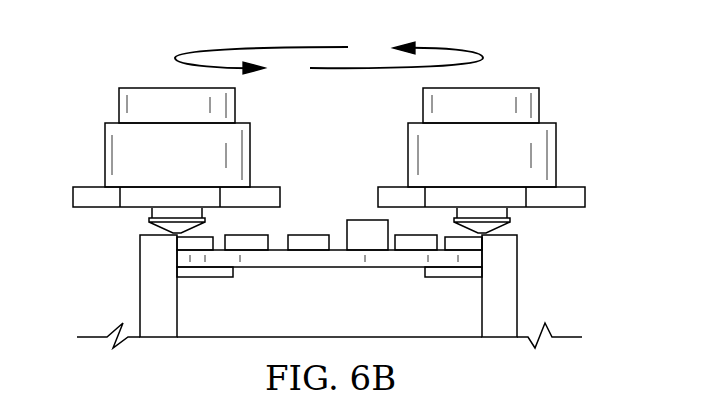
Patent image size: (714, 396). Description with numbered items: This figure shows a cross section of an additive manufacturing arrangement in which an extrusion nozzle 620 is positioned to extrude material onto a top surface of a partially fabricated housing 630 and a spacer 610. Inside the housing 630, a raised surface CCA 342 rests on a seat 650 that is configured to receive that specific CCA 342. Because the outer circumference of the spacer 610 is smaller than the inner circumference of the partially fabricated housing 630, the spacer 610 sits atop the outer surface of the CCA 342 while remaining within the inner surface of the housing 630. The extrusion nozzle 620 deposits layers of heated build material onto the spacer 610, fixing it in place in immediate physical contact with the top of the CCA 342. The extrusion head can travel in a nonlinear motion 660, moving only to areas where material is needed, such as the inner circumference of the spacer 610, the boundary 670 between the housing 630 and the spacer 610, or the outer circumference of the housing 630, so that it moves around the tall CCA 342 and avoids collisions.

The raised surface CCA 342 is at (355, 220).
The spacer 610 is at (213, 240).
The extrusion nozzle 620 is at (105, 158).
The partially fabricated housing 630 is at (140, 275).
The seat 650 is at (452, 278).
The nonlinear motion 660 is at (277, 47).
The boundary 670 is at (494, 247).